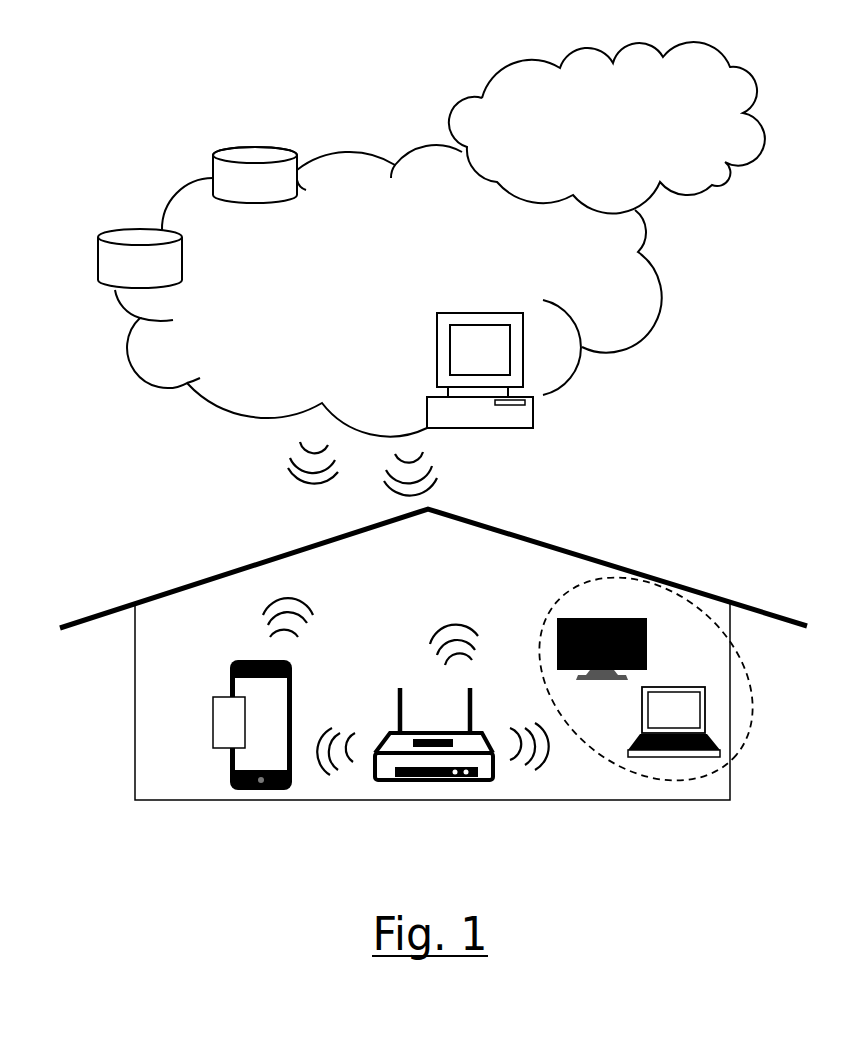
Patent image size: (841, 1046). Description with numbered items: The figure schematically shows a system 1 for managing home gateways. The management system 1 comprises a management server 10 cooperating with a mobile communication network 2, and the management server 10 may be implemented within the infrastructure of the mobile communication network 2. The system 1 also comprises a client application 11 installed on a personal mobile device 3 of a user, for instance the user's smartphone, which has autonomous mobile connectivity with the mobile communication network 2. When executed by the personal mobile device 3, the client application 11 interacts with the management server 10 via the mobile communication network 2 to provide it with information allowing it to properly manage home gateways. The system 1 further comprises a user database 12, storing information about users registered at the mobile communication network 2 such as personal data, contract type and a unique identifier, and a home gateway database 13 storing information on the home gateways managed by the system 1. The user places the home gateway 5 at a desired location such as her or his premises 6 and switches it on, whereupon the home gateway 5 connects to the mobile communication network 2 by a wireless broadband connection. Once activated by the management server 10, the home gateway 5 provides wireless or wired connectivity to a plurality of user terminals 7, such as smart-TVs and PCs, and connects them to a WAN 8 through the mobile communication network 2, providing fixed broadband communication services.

The system for managing home gateways 1 is at (557, 440).
The mobile communication network 2 is at (655, 288).
The personal mobile device 3 is at (263, 784).
The home gateway 5 is at (437, 780).
The premises 6 is at (135, 697).
The user terminals 7 is at (748, 678).
The WAN 8 is at (763, 120).
The management server 10 is at (478, 313).
The client application 11 is at (213, 720).
The user database 12 is at (253, 145).
The home gateway database 13 is at (140, 230).